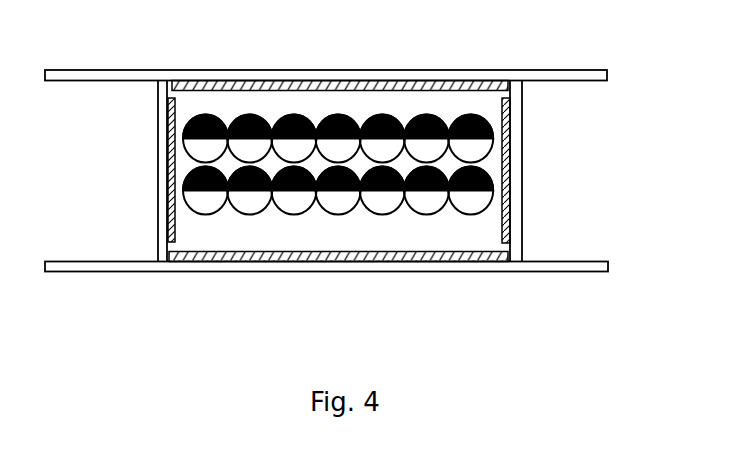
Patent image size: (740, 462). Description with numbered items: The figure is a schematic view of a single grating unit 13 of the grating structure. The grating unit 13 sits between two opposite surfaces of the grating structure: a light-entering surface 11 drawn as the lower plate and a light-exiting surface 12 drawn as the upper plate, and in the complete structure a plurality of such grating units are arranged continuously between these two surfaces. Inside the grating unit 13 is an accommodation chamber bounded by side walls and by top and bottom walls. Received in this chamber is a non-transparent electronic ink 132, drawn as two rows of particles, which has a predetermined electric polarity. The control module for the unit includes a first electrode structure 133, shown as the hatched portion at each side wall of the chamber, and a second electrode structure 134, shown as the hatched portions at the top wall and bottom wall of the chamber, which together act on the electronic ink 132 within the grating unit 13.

The light-entering surface 11 is at (570, 270).
The light-exiting surface 12 is at (582, 73).
The grating unit 13 is at (620, 182).
The non-transparent electronic ink 132 is at (341, 116).
The first electrode structure 133 is at (170, 146).
The second electrode structure 134 is at (423, 88).